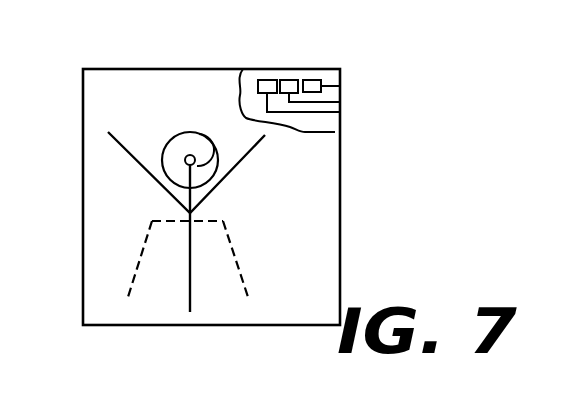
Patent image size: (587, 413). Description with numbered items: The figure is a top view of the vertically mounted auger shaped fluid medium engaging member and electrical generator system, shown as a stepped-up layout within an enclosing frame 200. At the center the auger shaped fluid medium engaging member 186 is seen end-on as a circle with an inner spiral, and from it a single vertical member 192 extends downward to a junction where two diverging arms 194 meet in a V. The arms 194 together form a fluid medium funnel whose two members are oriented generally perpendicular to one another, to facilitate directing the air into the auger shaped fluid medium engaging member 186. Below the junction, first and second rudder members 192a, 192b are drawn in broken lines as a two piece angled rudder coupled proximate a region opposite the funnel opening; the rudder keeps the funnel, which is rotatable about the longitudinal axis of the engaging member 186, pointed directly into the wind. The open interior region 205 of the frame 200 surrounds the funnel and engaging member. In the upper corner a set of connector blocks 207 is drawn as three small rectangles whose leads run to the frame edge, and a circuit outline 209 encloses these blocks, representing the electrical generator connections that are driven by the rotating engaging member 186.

The sensing element 186 is at (144, 188).
The vertical arm 192 is at (190, 289).
The left dashed boundary 192a is at (138, 265).
The right dashed boundary 192b is at (237, 256).
The V-shaped arm 194 is at (160, 124).
The housing frame 200 is at (242, 325).
The interior region 205 is at (291, 186).
The connector blocks 207 is at (279, 72).
The circuit outline 209 is at (323, 86).